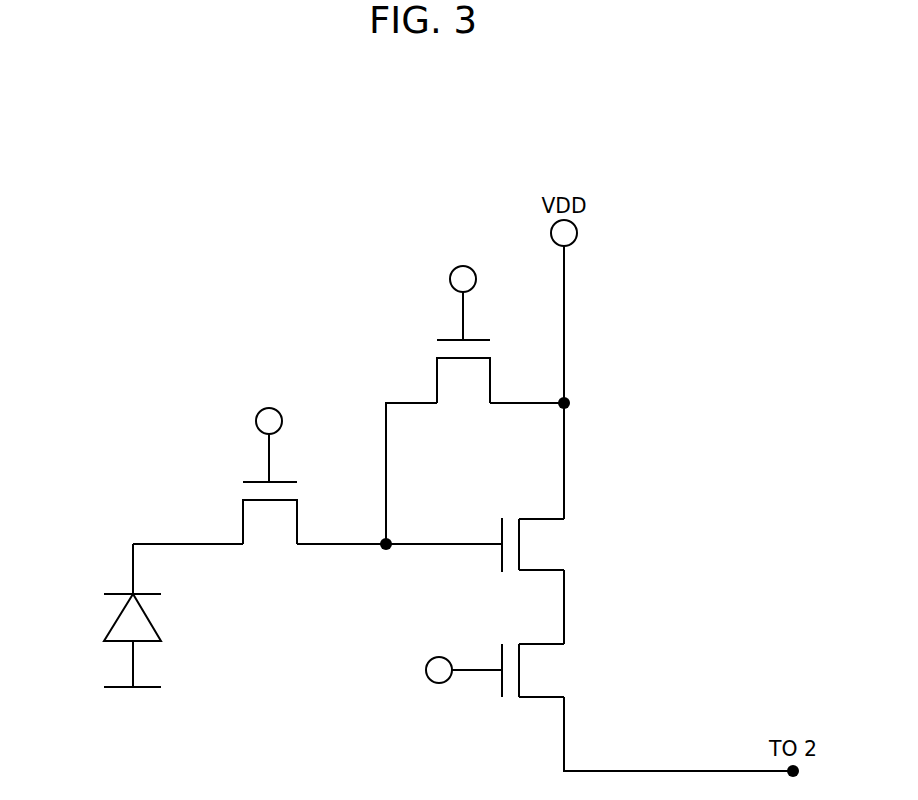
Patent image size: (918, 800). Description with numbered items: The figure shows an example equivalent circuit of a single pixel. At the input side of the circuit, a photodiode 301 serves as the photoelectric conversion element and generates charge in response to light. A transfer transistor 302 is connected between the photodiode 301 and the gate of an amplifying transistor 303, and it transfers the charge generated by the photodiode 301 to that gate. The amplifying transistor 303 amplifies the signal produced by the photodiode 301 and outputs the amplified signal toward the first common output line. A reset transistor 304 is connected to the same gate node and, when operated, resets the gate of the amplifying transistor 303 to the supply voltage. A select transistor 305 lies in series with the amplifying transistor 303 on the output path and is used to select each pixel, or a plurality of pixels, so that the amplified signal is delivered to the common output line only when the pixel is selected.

The photodiode 301 is at (117, 625).
The transfer transistor 302 is at (242, 490).
The amplifying transistor 303 is at (508, 517).
The reset transistor 304 is at (436, 348).
The select transistor 305 is at (508, 641).